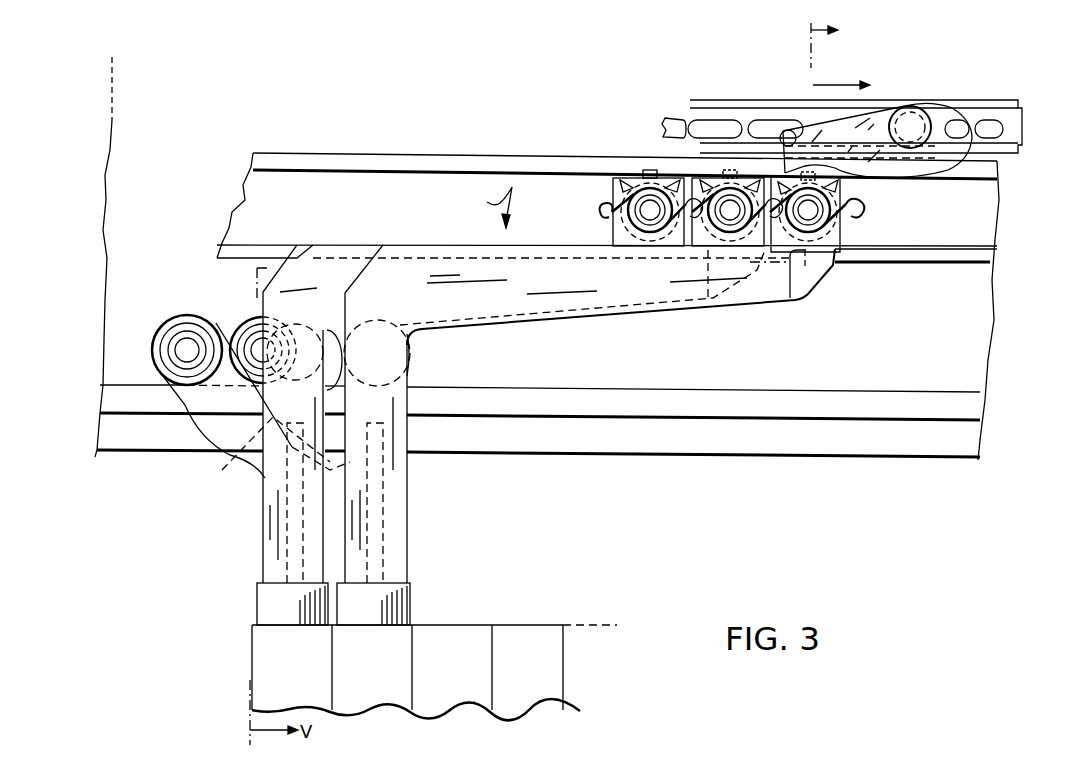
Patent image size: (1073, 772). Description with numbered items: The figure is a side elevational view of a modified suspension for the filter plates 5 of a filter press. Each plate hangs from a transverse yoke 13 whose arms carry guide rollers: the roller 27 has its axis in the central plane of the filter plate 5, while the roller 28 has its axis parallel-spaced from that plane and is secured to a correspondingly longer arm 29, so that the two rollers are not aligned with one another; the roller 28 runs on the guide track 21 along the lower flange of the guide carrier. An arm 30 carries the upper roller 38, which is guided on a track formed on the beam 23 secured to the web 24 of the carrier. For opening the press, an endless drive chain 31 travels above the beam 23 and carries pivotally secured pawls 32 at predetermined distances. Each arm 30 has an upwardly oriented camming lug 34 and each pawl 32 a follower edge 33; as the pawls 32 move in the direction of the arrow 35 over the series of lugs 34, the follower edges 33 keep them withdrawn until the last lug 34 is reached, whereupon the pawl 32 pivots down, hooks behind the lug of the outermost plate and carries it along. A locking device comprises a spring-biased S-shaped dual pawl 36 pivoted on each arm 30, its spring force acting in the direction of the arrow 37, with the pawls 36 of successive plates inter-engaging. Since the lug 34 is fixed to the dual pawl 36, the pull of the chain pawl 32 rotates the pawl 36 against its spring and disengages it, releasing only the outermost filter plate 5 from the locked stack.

The filter plate 5 is at (262, 638).
The transverse yoke 13 is at (408, 601).
The guide track 21 is at (100, 398).
The beam 23 is at (242, 210).
The web 24 is at (108, 193).
The roller 27 is at (412, 356).
The roller 28 is at (247, 330).
The arm 29 is at (255, 405).
The arm 30 is at (645, 285).
The endless drive chain 31 is at (673, 120).
The pawl 32 is at (884, 105).
The follower edge 33 is at (893, 170).
The camming lug 34 is at (650, 172).
The arrow 35 is at (848, 83).
The S-shaped dual pawl 36 is at (612, 198).
The arrow 37 is at (485, 206).
The roller 38 is at (863, 211).